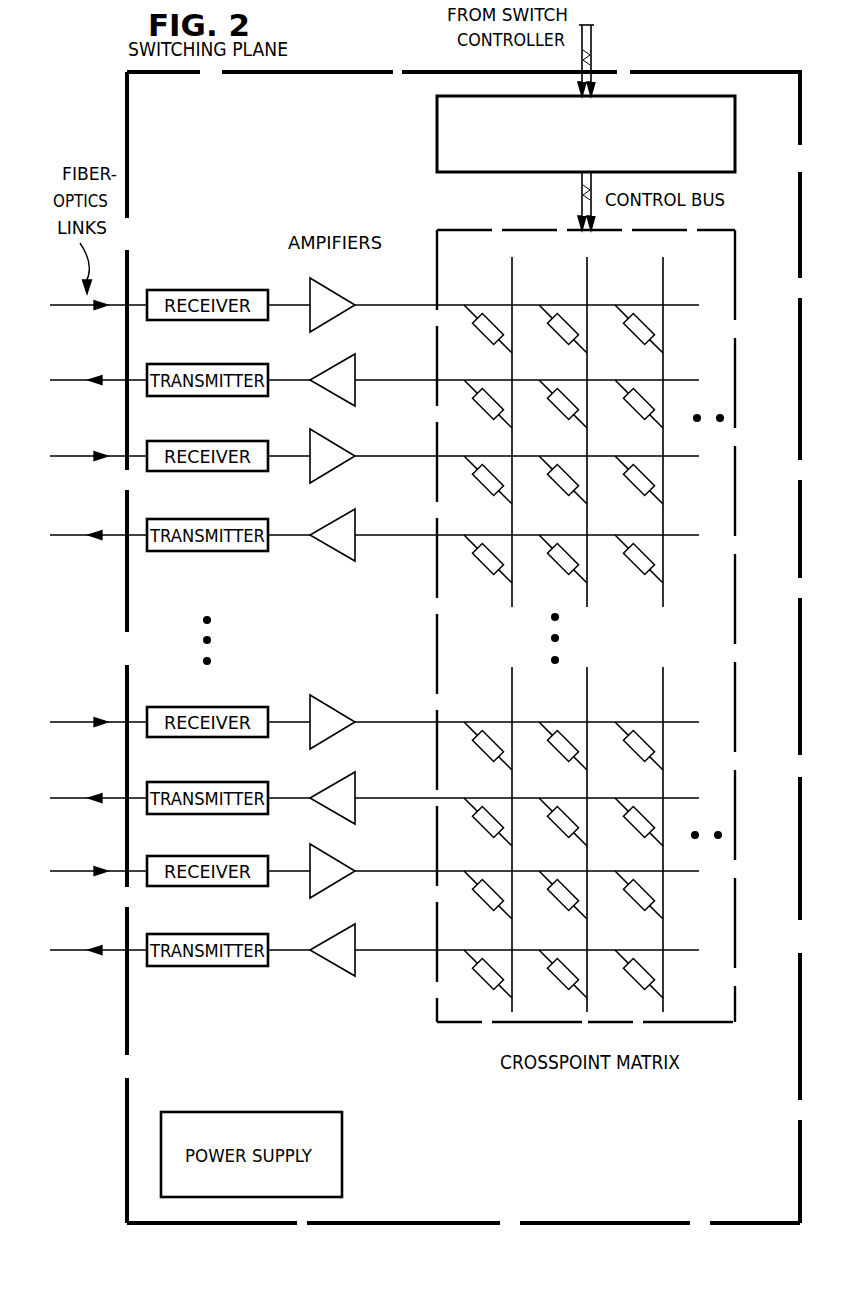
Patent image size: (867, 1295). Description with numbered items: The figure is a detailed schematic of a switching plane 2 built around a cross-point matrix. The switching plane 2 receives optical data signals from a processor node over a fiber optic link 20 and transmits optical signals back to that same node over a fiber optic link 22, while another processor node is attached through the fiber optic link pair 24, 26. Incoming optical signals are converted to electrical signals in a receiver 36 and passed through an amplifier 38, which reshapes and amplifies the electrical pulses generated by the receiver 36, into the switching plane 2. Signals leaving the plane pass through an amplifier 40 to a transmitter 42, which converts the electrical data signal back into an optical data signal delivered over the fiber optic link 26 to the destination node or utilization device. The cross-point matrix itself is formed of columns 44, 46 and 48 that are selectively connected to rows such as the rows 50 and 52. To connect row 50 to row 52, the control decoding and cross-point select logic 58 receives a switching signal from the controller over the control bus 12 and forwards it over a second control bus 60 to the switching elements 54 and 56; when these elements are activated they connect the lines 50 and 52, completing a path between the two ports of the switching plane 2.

The switching plane 2 is at (117, 1160).
The control bus 12 is at (592, 38).
The fiber optic link 20 is at (82, 312).
The fiber optic link 22 is at (82, 386).
The fiber optic link 24 is at (82, 462).
The fiber optic link 26 is at (82, 540).
The receiver 36 is at (222, 290).
The amplifier 38 is at (326, 292).
The amplifier 40 is at (334, 550).
The transmitter 42 is at (232, 552).
The column 44 is at (512, 284).
The column 46 is at (587, 284).
The column 48 is at (663, 284).
The row 50 is at (397, 303).
The row 52 is at (394, 538).
The switching element 54 is at (673, 337).
The switching element 56 is at (634, 570).
The control decoding and cross-point select logic 58 is at (437, 147).
The control bus 60 is at (582, 202).